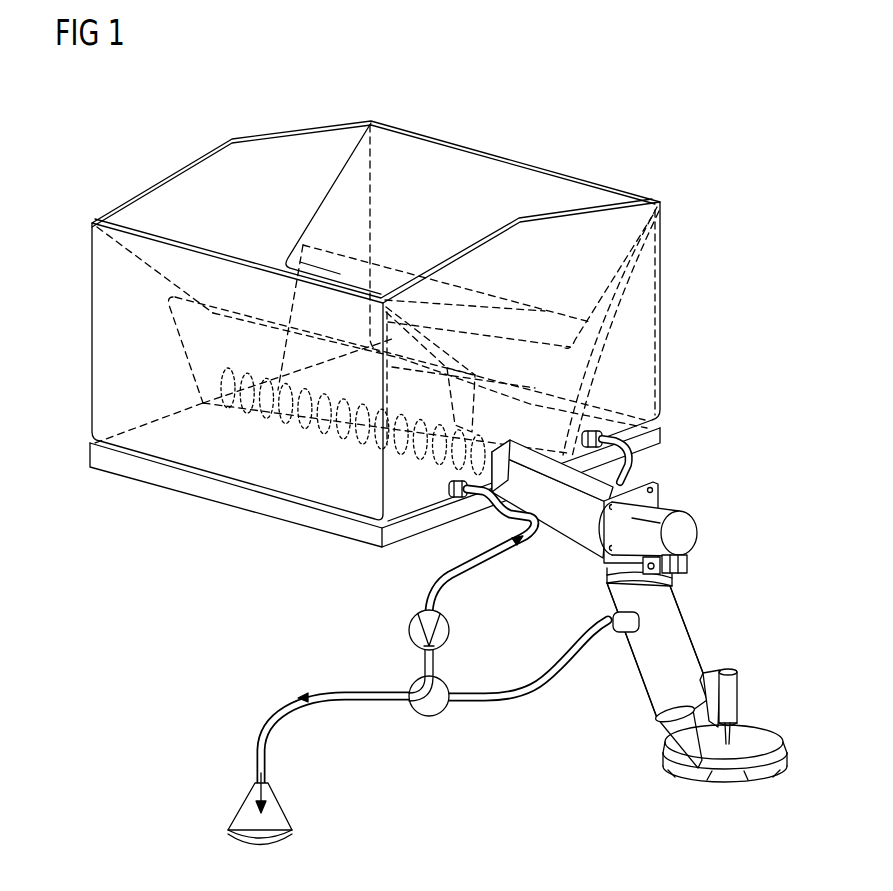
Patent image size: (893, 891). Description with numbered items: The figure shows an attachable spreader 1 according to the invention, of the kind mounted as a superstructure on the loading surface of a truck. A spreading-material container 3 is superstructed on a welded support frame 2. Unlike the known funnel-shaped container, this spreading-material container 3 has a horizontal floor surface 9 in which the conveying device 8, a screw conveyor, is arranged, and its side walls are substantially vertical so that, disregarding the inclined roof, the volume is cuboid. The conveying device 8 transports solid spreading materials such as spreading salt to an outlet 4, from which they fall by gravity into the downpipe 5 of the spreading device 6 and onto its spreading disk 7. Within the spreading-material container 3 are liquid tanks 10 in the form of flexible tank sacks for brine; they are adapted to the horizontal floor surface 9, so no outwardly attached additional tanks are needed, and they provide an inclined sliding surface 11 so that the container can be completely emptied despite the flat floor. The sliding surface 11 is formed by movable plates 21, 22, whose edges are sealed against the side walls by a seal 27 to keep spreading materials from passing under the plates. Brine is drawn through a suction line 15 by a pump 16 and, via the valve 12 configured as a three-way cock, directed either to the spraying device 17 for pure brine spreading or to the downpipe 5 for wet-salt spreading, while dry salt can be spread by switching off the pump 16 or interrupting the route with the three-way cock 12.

The attachable spreader 1 is at (211, 120).
The support frame 2 is at (208, 488).
The spreading-material container 3 is at (91, 308).
The outlet 4 is at (663, 508).
The downpipe 5 is at (684, 645).
The spreading device 6 is at (752, 664).
The spreading disk 7 is at (726, 778).
The conveying device 8 is at (235, 380).
The horizontal floor surface 9 is at (180, 452).
The liquid tanks 10 is at (398, 505).
The sliding surface 11 is at (452, 158).
The valve 12 is at (426, 715).
The suction line 15 is at (470, 560).
The pump 16 is at (409, 633).
The spraying device 17 is at (251, 812).
The movable plate 21 is at (320, 224).
The movable plate 22 is at (303, 307).
The seal 27 is at (328, 191).